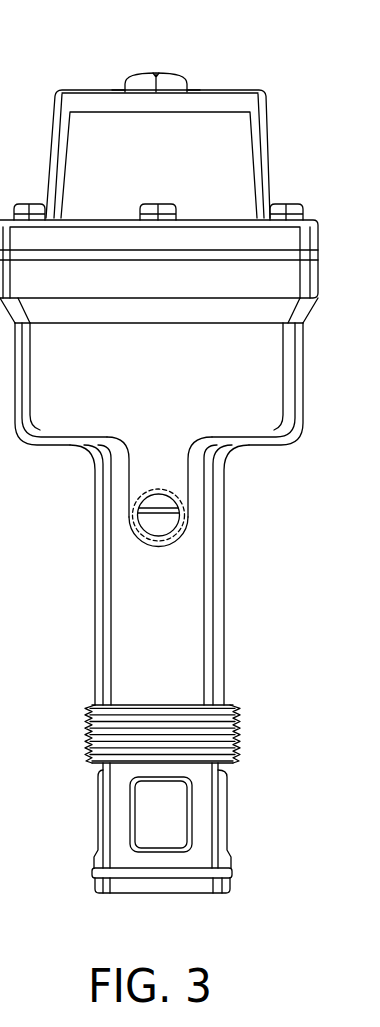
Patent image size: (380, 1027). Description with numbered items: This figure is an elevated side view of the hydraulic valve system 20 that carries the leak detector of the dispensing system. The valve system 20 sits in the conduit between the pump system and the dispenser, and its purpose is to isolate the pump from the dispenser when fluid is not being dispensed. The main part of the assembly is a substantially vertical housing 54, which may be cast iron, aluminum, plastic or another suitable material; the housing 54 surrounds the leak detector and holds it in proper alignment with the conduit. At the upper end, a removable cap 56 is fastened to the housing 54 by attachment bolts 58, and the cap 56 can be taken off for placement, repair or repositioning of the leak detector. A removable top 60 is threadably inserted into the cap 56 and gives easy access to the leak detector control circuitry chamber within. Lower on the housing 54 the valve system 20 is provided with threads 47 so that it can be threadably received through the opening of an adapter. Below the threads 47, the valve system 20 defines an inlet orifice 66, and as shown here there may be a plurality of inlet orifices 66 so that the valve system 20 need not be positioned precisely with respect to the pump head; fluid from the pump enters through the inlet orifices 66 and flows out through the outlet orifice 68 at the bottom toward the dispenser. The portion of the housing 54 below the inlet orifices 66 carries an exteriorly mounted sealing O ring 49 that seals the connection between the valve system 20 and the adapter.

The hydraulic valve system 20 is at (236, 588).
The threads 47 is at (88, 714).
The sealing O ring 49 is at (93, 870).
The housing 54 is at (95, 620).
The removable cap 56 is at (204, 160).
The attachment bolts 58 is at (283, 204).
The removable top 60 is at (235, 100).
The inlet orifice 66 is at (97, 815).
The outlet orifice 68 is at (197, 893).